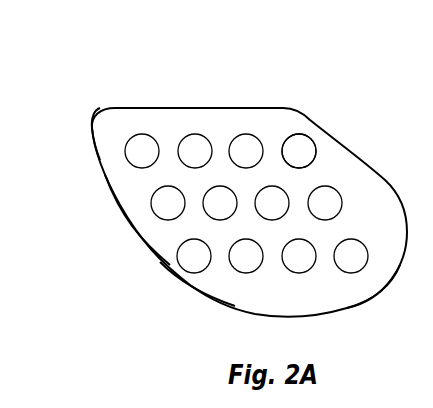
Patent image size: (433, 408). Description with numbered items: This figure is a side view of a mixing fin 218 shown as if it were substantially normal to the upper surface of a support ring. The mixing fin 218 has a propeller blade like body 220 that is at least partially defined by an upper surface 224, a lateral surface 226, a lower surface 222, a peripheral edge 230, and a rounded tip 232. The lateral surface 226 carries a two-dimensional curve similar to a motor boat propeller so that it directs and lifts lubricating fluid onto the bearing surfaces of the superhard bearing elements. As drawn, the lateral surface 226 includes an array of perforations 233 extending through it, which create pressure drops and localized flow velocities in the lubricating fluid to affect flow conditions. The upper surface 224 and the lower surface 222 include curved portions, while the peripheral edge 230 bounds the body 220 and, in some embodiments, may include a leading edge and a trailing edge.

The mixing fin 218 is at (100, 98).
The propeller blade like body 220 is at (184, 126).
The lower surface 222 is at (347, 308).
The upper surface 224 is at (265, 108).
The lateral surface 226 is at (168, 232).
The peripheral edge 230 is at (220, 299).
The rounded tip 232 is at (92, 126).
The perforations 233 is at (302, 147).